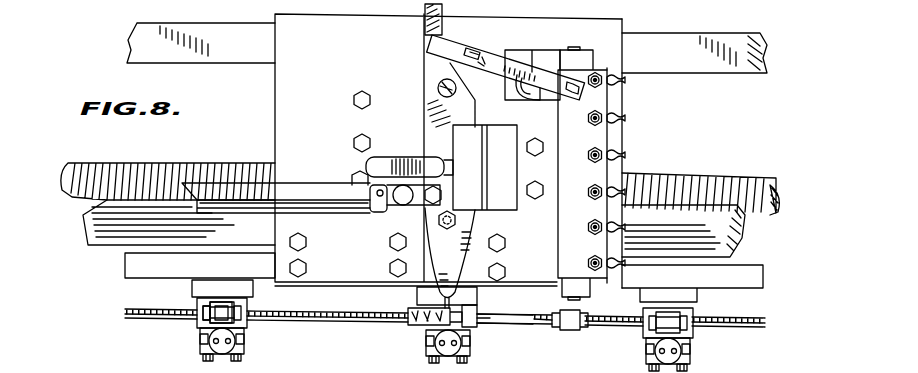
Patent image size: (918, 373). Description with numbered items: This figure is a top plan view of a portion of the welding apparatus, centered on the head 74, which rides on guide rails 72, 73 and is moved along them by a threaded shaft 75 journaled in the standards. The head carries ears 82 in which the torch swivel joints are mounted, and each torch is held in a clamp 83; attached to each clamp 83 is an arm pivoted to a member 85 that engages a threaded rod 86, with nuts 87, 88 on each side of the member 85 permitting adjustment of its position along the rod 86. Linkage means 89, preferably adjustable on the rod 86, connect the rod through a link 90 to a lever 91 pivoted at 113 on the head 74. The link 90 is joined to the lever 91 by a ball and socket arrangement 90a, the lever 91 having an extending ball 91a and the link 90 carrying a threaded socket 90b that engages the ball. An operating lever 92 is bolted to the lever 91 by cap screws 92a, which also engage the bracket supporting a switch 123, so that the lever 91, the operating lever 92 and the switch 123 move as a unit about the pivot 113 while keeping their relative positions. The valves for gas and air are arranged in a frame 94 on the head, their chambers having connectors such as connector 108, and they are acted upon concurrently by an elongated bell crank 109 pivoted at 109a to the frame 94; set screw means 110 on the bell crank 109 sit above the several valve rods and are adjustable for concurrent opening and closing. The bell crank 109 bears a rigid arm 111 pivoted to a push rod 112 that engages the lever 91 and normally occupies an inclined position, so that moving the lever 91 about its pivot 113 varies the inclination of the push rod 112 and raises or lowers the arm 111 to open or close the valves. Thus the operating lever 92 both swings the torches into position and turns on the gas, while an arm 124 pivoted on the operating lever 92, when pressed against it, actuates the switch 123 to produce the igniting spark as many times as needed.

The guide rail 72 is at (748, 238).
The guide rail 73 is at (746, 70).
The head 74 is at (448, 150).
The threaded shaft 75 is at (760, 174).
The ears 82 is at (192, 288).
The clamp 83 is at (249, 350).
The member 85 is at (220, 322).
The threaded rod 86 is at (765, 322).
The nut 87 is at (200, 318).
The nut 88 is at (247, 311).
The linkage means 89 is at (572, 330).
The link 90 is at (503, 325).
The ball and socket arrangement 90a is at (478, 328).
The socket 90b is at (408, 310).
The lever 91 is at (450, 258).
The ball 91a is at (478, 313).
The operating lever 92 is at (287, 184).
The cap screws 92a is at (424, 204).
The frame 94 is at (585, 62).
The connector 108 is at (628, 118).
The bell crank 109 is at (600, 137).
The pivot 109a is at (575, 40).
The set screw means 110 is at (588, 190).
The rigid arm 111 is at (540, 99).
The push rod 112 is at (452, 50).
The pivot 113 is at (456, 222).
The switch 123 is at (514, 212).
The arm 124 is at (328, 213).